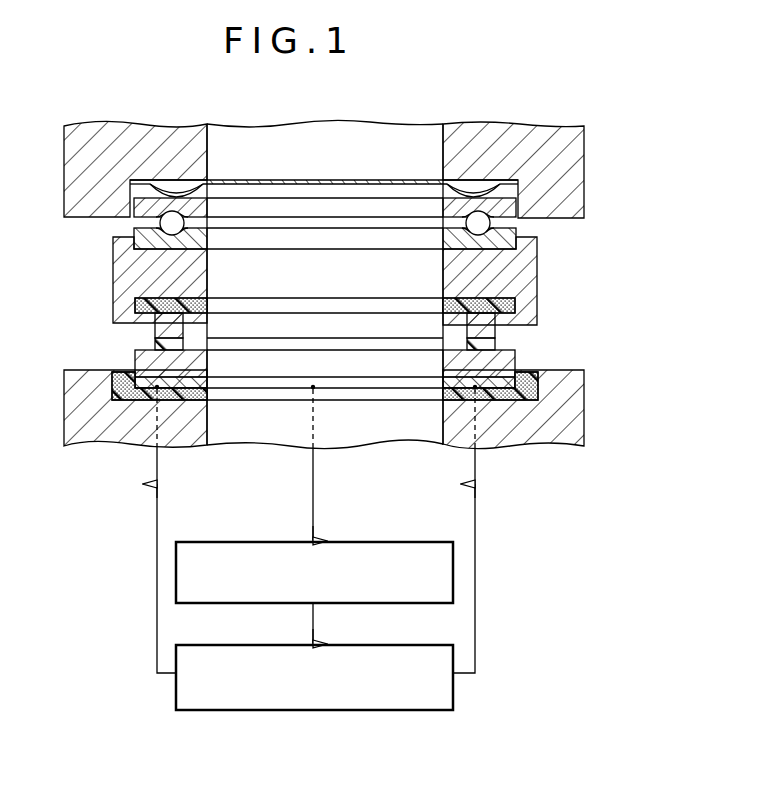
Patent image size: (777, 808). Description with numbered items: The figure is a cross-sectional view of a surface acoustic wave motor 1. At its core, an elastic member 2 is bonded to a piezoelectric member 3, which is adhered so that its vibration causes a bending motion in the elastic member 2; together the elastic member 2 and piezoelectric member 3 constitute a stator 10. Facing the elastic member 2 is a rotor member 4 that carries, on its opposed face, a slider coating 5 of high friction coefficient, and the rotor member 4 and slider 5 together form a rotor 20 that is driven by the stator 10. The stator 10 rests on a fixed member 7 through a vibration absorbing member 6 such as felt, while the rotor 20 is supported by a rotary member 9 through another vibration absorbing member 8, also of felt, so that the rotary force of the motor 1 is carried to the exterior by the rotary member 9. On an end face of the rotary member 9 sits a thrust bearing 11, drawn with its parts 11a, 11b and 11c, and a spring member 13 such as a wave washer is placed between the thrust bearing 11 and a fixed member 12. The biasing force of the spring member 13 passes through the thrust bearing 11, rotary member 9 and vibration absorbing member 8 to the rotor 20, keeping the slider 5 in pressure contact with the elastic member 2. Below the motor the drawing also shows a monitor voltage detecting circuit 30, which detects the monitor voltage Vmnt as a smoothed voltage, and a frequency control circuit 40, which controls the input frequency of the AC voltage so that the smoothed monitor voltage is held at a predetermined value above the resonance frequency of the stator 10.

The surface acoustic wave motor 1 is at (498, 107).
The elastic member 2 is at (508, 364).
The piezoelectric member 3 is at (514, 388).
The rotor member 4 is at (483, 329).
The slider coating 5 is at (496, 343).
The vibration absorbing member 6 is at (538, 396).
The fixed member 7 is at (567, 440).
The vibration absorbing member 8 is at (505, 318).
The rotary member 9 is at (535, 273).
The stator 10 is at (134, 368).
The thrust bearing 11 is at (121, 226).
The thrust bearing component 11a is at (506, 243).
The thrust bearing component 11b is at (488, 220).
The thrust bearing component 11c is at (491, 228).
The fixed member 12 is at (578, 147).
The spring member 13 is at (442, 182).
The rotor 20 is at (151, 336).
The monitor voltage detecting circuit 30 is at (406, 542).
The frequency control circuit 40 is at (407, 647).